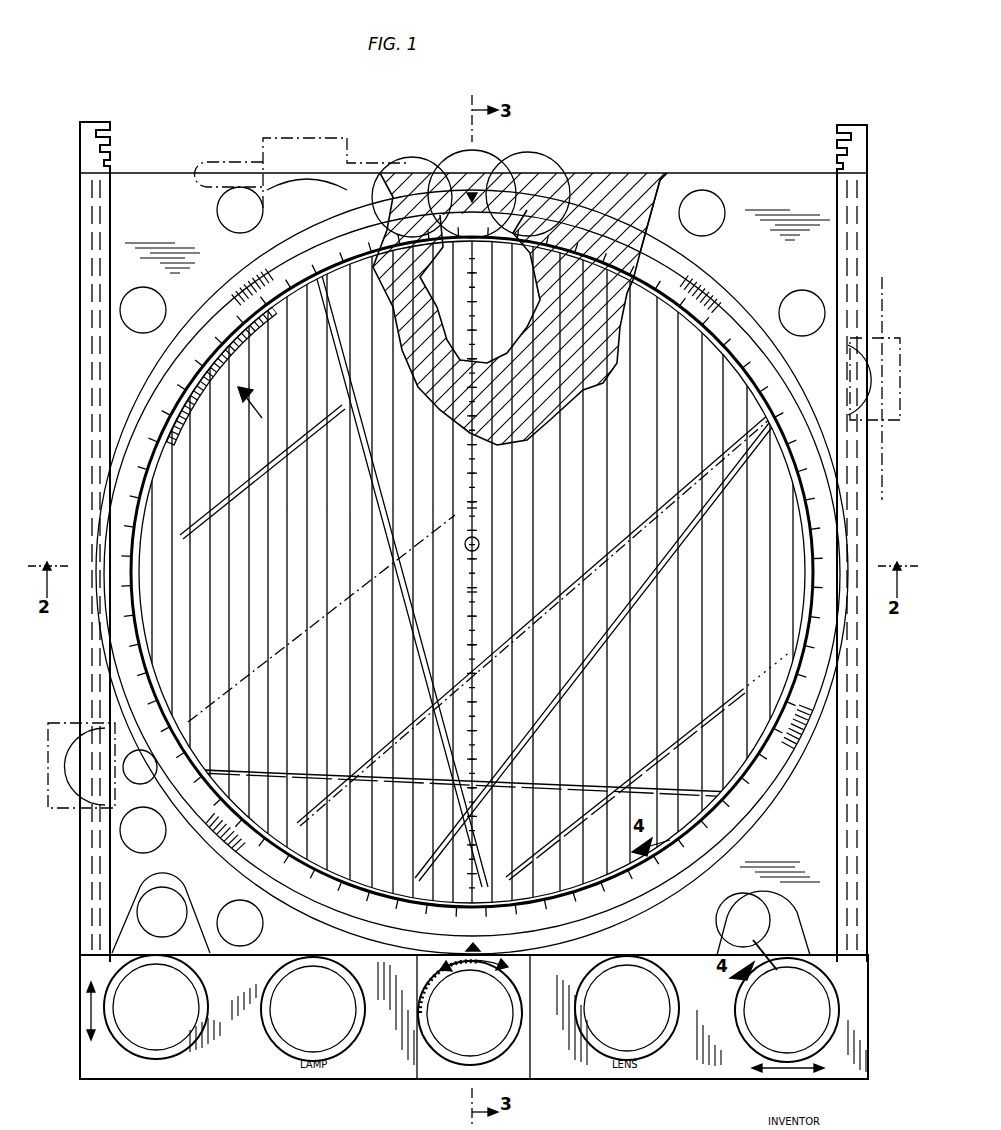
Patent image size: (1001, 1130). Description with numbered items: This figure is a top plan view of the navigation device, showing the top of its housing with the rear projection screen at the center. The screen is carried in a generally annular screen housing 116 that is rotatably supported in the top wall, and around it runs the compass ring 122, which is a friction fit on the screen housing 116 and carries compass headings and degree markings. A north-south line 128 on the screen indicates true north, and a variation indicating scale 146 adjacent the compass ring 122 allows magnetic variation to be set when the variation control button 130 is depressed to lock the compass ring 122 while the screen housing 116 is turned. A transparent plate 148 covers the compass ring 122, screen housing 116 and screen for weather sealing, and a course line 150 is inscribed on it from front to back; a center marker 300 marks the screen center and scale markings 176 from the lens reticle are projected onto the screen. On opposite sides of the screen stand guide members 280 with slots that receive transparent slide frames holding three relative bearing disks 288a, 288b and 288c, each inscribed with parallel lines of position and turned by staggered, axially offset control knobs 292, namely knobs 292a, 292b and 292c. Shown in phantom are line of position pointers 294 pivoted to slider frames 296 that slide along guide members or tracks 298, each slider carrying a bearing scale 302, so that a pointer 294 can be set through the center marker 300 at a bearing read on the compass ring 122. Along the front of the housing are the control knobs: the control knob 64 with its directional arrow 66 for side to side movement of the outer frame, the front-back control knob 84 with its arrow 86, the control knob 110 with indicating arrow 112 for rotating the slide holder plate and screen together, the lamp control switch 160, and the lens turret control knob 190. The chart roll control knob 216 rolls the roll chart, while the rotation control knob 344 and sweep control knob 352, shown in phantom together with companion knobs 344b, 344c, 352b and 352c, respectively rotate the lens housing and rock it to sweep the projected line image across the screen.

The control knob 292 is at (86, 126).
The bearing scale 302 is at (274, 186).
The control knob 292a is at (470, 148).
The control knob 292b is at (431, 158).
The control knob 292c is at (552, 168).
The compass ring 122 is at (602, 238).
The screen housing 116 is at (640, 227).
The guide roller 344c is at (705, 236).
The guide roller 352c is at (820, 295).
The guide members or tracks 298 is at (878, 314).
The slider frame 296 is at (840, 345).
The guide roller 352b is at (224, 221).
The guide roller 344b is at (140, 333).
The variation indicating scale 146 is at (255, 325).
The north-south line 128 is at (262, 420).
The transparent plate 148 is at (482, 287).
The relative bearing disk 288c is at (536, 336).
The relative bearing disk 288b is at (588, 376).
The relative bearing disk 288a is at (700, 437).
The course line 150 is at (478, 509).
The center marker 300 is at (480, 544).
The scale markings 176 is at (478, 593).
The line of position pointers 294 is at (633, 597).
The guide members 280 is at (876, 705).
The sweep control knob 352 is at (165, 858).
The chart roll control knob 216 is at (175, 892).
The rotation control knob 344 is at (263, 928).
The arrow 86 is at (84, 1012).
The front-back control knob 84 is at (170, 1018).
The lamp control switch 160 is at (334, 1020).
The control knob 110 is at (490, 1025).
The indicating arrow 112 is at (524, 975).
The lens turret control knob 190 is at (648, 1019).
The control knob 64 is at (801, 1021).
The directional arrow 66 is at (790, 1070).
The variation control button 130 is at (757, 930).